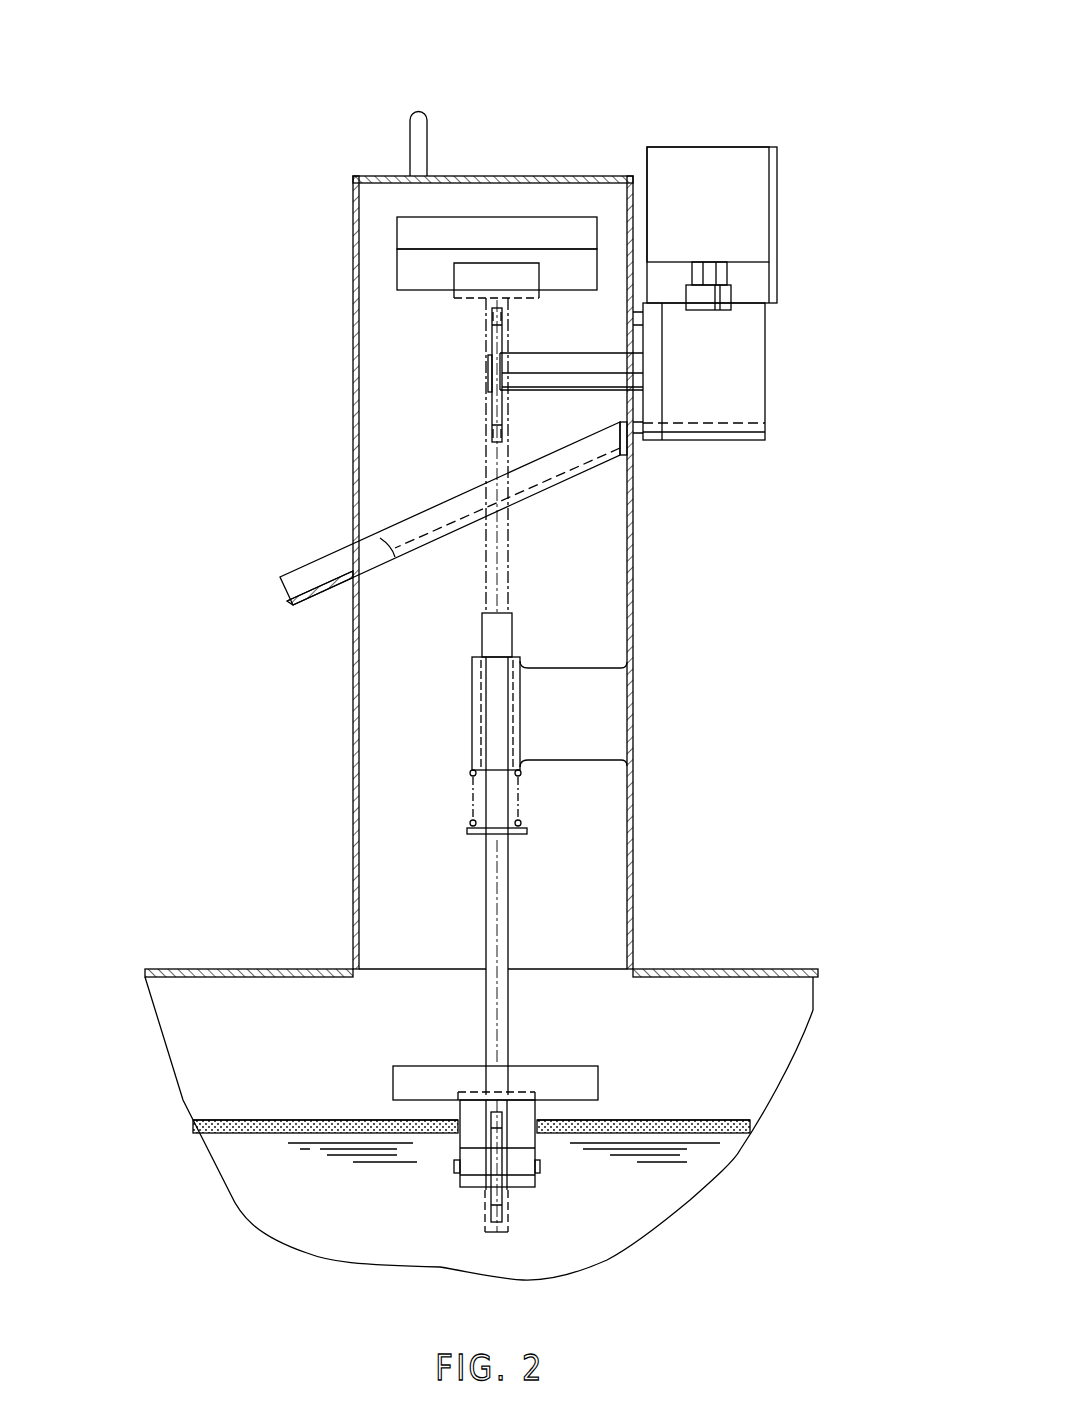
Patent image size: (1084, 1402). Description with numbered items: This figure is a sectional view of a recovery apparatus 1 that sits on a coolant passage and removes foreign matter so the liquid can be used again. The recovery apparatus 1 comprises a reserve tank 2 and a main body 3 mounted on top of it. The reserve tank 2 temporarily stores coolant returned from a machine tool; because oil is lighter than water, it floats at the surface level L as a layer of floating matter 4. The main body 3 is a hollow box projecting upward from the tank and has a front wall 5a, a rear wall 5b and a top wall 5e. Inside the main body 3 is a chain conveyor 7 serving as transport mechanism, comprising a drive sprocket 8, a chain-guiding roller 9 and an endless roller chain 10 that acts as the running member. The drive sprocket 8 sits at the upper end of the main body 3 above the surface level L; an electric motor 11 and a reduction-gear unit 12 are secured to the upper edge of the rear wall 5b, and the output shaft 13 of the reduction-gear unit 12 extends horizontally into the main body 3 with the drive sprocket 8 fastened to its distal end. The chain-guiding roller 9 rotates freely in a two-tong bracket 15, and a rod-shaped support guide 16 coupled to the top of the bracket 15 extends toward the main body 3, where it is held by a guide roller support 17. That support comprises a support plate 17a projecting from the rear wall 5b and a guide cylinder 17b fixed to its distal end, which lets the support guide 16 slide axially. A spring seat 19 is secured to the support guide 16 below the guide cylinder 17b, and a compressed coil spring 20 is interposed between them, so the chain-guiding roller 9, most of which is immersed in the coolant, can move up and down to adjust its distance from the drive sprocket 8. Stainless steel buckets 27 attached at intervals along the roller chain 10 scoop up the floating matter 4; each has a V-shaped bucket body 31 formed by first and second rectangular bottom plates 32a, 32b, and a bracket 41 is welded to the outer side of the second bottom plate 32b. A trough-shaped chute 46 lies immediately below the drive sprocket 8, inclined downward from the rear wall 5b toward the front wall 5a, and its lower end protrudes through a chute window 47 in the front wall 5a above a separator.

The recovery apparatus 1 is at (708, 108).
The reserve tank 2 is at (763, 970).
The main body 3 is at (348, 343).
The floating matter 4 is at (272, 1125).
The front wall 5a is at (350, 757).
The rear wall 5b is at (636, 575).
The top wall 5e is at (502, 176).
The chain conveyor 7 is at (483, 412).
The drive sprocket 8 is at (494, 340).
The chain-guiding roller 9 is at (500, 1203).
The endless roller chain 10 is at (510, 552).
The electric motor 11 is at (780, 190).
The reduction-gear unit 12 is at (752, 360).
The output shaft 13 is at (576, 366).
The two-tong bracket 15 is at (460, 1143).
The support guide 16 is at (510, 915).
The guide roller support 17 is at (700, 668).
The support plate 17a is at (608, 735).
The guide cylinder 17b is at (497, 692).
The spring seat 19 is at (520, 832).
The compressed coil spring 20 is at (473, 773).
The bucket 27 is at (572, 225).
The bucket body 31 is at (415, 215).
The first rectangular bottom plate 32a is at (407, 230).
The second rectangular bottom plate 32b is at (407, 273).
The bracket 41 is at (460, 273).
The chute 46 is at (437, 523).
The chute window 47 is at (350, 543).
The surface level L is at (712, 1118).